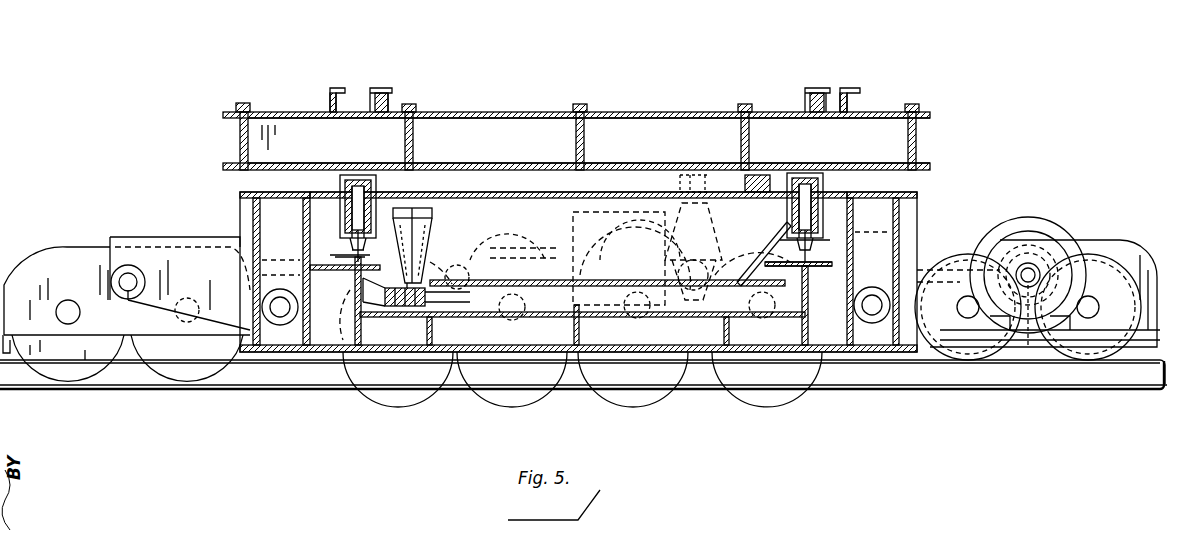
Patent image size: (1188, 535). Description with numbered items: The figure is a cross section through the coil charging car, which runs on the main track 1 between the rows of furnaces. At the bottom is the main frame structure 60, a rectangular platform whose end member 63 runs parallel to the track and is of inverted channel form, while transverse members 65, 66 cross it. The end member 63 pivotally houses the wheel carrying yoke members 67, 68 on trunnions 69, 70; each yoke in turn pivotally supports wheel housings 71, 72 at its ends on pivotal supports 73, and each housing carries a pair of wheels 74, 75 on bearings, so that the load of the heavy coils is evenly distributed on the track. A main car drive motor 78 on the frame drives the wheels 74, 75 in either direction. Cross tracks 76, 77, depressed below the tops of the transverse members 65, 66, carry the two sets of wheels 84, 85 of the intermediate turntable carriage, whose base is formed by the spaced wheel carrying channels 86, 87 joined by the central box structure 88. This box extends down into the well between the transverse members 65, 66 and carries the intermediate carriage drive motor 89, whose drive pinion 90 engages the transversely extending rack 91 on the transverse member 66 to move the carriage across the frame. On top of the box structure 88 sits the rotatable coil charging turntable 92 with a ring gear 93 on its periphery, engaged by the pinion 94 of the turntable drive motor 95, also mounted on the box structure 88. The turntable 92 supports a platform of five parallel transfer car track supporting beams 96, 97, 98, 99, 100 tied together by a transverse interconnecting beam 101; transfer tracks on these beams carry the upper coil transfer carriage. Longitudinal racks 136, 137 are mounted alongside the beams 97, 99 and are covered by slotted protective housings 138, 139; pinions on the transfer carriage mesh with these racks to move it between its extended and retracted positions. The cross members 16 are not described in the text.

The main track 1 is at (468, 377).
The frame cross members 16 is at (559, 283).
The main frame structure 60 is at (940, 203).
The end member 63 is at (240, 205).
The transverse member 65 is at (900, 200).
The transverse member 66 is at (247, 198).
The wheel carrying yoke member 67 is at (198, 235).
The wheel carrying yoke member 68 is at (970, 228).
The pivot or trunnion 69 is at (280, 317).
The pivot or trunnion 70 is at (872, 315).
The wheel housing 71 is at (68, 245).
The wheel housing 72 is at (1100, 240).
The pivotal support 73 is at (128, 299).
The wheel 74 is at (70, 360).
The wheel 75 is at (192, 350).
The cross track 76 is at (302, 247).
The cross track 77 is at (850, 247).
The main car drive motor 78 is at (1052, 205).
The wheels 84 is at (347, 191).
The wheels 85 is at (810, 190).
The wheel carrying channel 86 is at (358, 175).
The wheel carrying channel 87 is at (800, 190).
The central box structure 88 is at (560, 263).
The intermediate carriage drive motor 89 is at (418, 221).
The drive pinion 90 is at (425, 292).
The rack 91 is at (390, 303).
The coil charging turntable 92 is at (630, 166).
The ring gear 93 is at (778, 178).
The pinion 94 is at (680, 185).
The turntable drive motor 95 is at (710, 223).
The transfer car track supporting beam 96 is at (916, 136).
The transfer car track supporting beam 97 is at (741, 137).
The transfer car track supporting beam 98 is at (576, 137).
The transfer car track supporting beam 99 is at (405, 137).
The transfer car track supporting beam 100 is at (240, 143).
The transverse interconnecting beam 101 is at (287, 138).
The rack 136 is at (810, 89).
The rack 137 is at (377, 94).
The slotted protective housing 138 is at (843, 91).
The slotted protective housing 139 is at (332, 98).